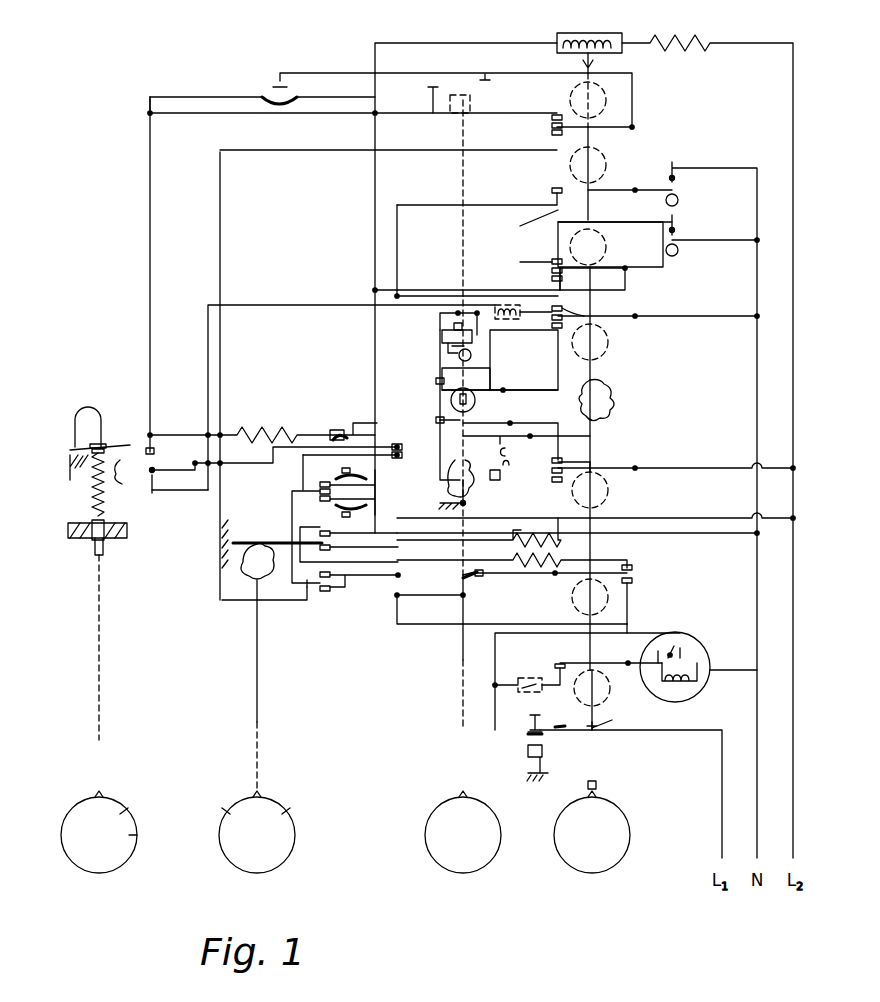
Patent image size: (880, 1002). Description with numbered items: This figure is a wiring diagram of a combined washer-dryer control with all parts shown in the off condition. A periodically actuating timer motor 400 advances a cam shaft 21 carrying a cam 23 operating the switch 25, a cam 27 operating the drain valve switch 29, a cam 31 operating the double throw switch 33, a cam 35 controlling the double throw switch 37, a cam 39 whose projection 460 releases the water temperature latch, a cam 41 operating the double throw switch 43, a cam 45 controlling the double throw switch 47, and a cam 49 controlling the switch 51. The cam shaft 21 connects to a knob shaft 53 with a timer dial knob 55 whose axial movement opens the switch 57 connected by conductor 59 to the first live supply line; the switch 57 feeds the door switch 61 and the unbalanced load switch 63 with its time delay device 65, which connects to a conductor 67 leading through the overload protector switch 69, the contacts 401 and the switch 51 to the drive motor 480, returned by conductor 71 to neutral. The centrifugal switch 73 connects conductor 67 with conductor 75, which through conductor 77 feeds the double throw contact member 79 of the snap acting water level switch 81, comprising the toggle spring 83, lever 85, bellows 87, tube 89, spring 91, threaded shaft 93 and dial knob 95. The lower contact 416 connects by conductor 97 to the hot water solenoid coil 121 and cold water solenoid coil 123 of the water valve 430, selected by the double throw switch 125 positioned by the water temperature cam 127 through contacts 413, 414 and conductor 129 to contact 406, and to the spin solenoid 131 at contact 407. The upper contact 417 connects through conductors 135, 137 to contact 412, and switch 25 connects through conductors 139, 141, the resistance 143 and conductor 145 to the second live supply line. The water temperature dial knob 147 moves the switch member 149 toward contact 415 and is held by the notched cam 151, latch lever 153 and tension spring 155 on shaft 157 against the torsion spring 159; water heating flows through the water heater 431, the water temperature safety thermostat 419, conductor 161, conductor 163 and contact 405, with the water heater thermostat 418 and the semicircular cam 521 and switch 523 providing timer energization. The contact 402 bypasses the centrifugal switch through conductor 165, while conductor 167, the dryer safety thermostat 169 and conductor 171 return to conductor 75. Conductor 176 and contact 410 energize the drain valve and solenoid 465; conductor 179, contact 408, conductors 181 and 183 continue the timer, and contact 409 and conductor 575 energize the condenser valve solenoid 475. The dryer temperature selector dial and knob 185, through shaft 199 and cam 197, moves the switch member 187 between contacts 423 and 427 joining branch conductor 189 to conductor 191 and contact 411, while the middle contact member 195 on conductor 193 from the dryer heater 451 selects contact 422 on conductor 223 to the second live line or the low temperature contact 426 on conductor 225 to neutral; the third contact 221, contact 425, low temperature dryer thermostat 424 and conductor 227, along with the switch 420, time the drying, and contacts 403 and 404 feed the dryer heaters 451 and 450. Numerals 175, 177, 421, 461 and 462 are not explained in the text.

The cam shaft 21 is at (580, 57).
The cam 23 is at (574, 97).
The switch 25 is at (612, 127).
The cam 27 is at (570, 162).
The drain valve switch 29 is at (612, 192).
The cam 31 is at (606, 256).
The double throw switch 33 is at (572, 285).
The cam 35 is at (608, 344).
The double throw switch 37 is at (610, 318).
The cam 39 is at (606, 404).
The cam 41 is at (608, 494).
The double throw switch 43 is at (632, 466).
The cam 45 is at (572, 604).
The double throw switch 47 is at (512, 567).
The cam 49 is at (602, 700).
The switch 51 is at (586, 662).
The knob shaft 53 is at (596, 785).
The timer dial knob 55 is at (610, 858).
The switch 57 is at (614, 720).
The conductor 59 is at (712, 732).
The switch 61 is at (541, 754).
The unbalanced load switch 63 is at (532, 718).
The time delay device 65 is at (538, 769).
The conductor 67 is at (492, 686).
The overload protector switch 69 is at (535, 696).
The conductor 71 is at (720, 666).
The centrifugal switch 73 is at (660, 648).
The conductor 75 is at (444, 630).
The conductor 77 is at (258, 466).
The double throw contact member 79 is at (158, 472).
The snap acting water level switch 81 is at (120, 490).
The toggle spring 83 is at (118, 484).
The lever 85 is at (106, 452).
The bellows 87 is at (70, 447).
The tube 89 is at (80, 410).
The spring 91 is at (96, 488).
The threaded shaft 93 is at (90, 556).
The dial knob 95 is at (112, 860).
The conductor 97 is at (255, 305).
The hot water solenoid coil 121 is at (442, 334).
The cold or tepid water solenoid coil 123 is at (490, 335).
The double throw switch 125 is at (475, 400).
The water temperature cam 127 is at (490, 412).
The conductor 129 is at (554, 374).
The spin solenoid 131 is at (508, 303).
The conductor 135 is at (150, 258).
The conductor 137 is at (237, 113).
The conductor 139 is at (632, 83).
The conductors 141 is at (430, 43).
The resistance 143 is at (700, 43).
The conductor 145 is at (793, 136).
The water temperature dial knob 147 is at (488, 860).
The switch member 149 is at (441, 458).
The notched cam 151 is at (474, 499).
The latch lever 153 is at (526, 452).
The tension spring 155 is at (509, 484).
The shaft 157 is at (462, 655).
The torsion spring 159 is at (470, 516).
The conductor 161 is at (357, 423).
The conductor 163 is at (470, 380).
The conductor 165 is at (640, 612).
The conductor 167 is at (535, 590).
The dryer safety thermostat 169 is at (446, 592).
The conductor 171 is at (424, 595).
The circuit lead 175 is at (150, 97).
The conductor 176 is at (418, 204).
The circuit lead 177 is at (325, 73).
The conductor 179 is at (625, 282).
The conductor 181 is at (422, 288).
The conductor 183 is at (375, 195).
The dryer temperature selector dial and knob 185 is at (285, 855).
The switch member 187 is at (315, 590).
The branch conductor 189 is at (389, 610).
The conductor 191 is at (220, 258).
The conductor 193 is at (409, 557).
The middle contact member 195 is at (268, 534).
The cam 197 is at (250, 590).
The shaft 199 is at (257, 698).
The third contact 221 is at (292, 520).
The conductor 223 is at (672, 518).
The conductor 225 is at (690, 533).
The conductor 227 is at (300, 438).
The timer motor 400 is at (622, 36).
The contacts 401 is at (546, 676).
The contact 402 is at (632, 582).
The contact 403 is at (632, 568).
The stationary contact 404 is at (544, 479).
The contact 405 is at (568, 460).
The contact 406 is at (554, 324).
The contact 407 is at (590, 305).
The contact 408 is at (552, 278).
The stationary contact 409 is at (522, 262).
The contact 410 is at (552, 190).
The contact 411 is at (552, 133).
The contact 412 is at (552, 125).
The contact 413 is at (440, 380).
The contact 414 is at (433, 413).
The stationary contact 415 is at (371, 447).
The lower contact 416 is at (152, 494).
The upper contact 417 is at (150, 448).
The water heater thermostat 418 is at (300, 100).
The water temperature safety thermostat 419 is at (330, 432).
The switch 420 is at (347, 492).
The terminal 421 is at (306, 492).
The contact 422 is at (358, 524).
The contact 423 is at (360, 571).
The low temperature dryer thermostat 424 is at (426, 506).
The contact 425 is at (305, 491).
The low temperature contact 426 is at (359, 547).
The contact 427 is at (332, 592).
The water valve 430 is at (440, 313).
The water heater 431 is at (268, 438).
The dryer heater 450 is at (479, 536).
The dryer heater 451 is at (498, 576).
The projection 460 is at (604, 410).
The cam follower 461 is at (610, 395).
The cam follower 462 is at (596, 380).
The drain valve and solenoid 465 is at (668, 180).
The condenser valve solenoid 475 is at (664, 239).
The drive motor 480 is at (700, 640).
The semicircular cam 521 is at (450, 113).
The switch 523 is at (470, 100).
The conductor 575 is at (559, 230).